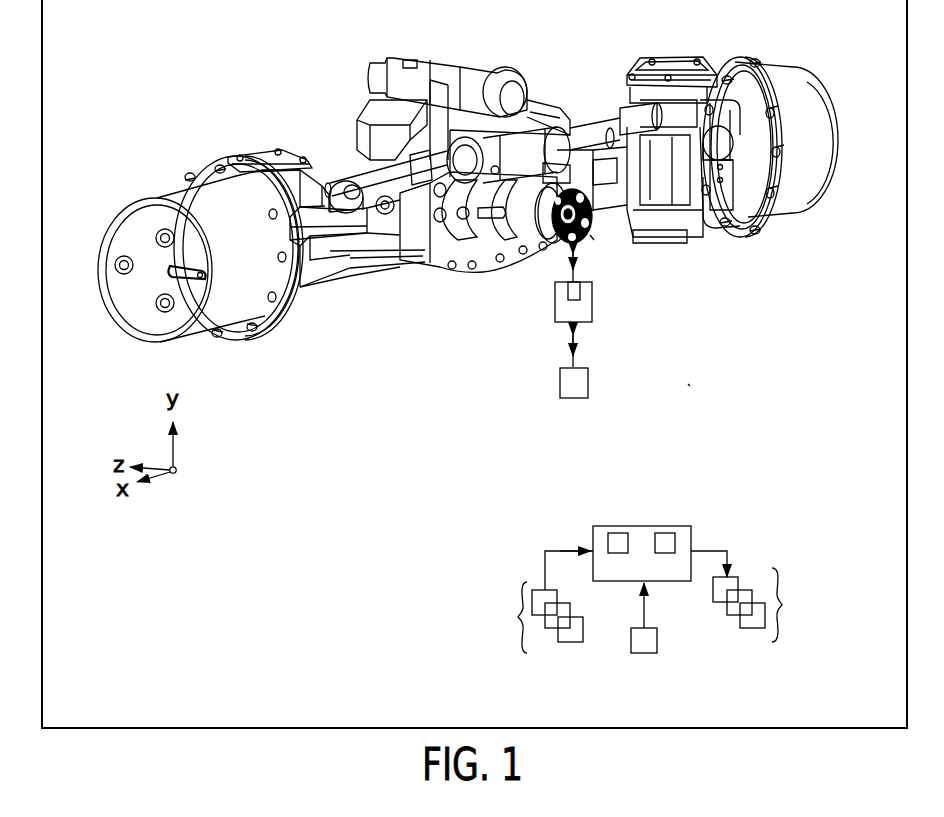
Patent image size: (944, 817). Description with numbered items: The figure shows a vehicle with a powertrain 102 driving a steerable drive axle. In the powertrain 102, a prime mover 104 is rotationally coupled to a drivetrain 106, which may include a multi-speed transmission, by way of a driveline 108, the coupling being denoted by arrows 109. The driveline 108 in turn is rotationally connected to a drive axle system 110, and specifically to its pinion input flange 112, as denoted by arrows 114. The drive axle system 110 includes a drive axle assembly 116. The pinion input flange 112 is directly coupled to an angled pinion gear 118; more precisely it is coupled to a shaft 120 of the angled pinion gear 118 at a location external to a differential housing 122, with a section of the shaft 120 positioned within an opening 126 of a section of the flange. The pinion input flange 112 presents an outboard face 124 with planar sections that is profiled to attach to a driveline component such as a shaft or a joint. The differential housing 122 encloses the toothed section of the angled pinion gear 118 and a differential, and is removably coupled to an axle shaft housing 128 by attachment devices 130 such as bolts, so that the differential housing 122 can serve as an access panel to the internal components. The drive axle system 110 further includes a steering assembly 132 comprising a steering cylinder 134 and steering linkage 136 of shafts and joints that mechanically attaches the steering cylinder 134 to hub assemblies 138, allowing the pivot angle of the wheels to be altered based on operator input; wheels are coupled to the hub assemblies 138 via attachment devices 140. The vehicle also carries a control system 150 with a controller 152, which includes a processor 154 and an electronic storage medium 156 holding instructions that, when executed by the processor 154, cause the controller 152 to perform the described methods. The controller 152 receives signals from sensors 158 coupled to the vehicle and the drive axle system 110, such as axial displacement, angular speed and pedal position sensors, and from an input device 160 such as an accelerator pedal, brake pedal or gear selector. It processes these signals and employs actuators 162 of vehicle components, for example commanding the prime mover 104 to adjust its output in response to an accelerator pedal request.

The powertrain 102 is at (692, 386).
The prime mover 104 is at (590, 380).
The drivetrain 106 is at (593, 300).
The driveline 108 is at (566, 300).
The arrows 109 is at (578, 343).
The drive axle system 110 is at (118, 78).
The pinion input flange 112 is at (605, 250).
The arrows 114 is at (566, 262).
The drive axle assembly 116 is at (203, 115).
The angled pinion gear 118 is at (598, 238).
The shaft 120 is at (503, 271).
The differential housing 122 is at (437, 254).
The outboard face 124 is at (578, 172).
The opening 126 is at (587, 178).
The axle shaft housing 128 is at (353, 278).
The attachment devices 130 is at (392, 187).
The steering assembly 132 is at (557, 80).
The steering cylinder 134 is at (533, 137).
The steering linkage 136 is at (435, 143).
The hub assemblies 138 is at (153, 185).
The attachment devices 140 is at (241, 188).
The control system 150 is at (518, 540).
The controller 152 is at (641, 526).
The processor 154 is at (608, 543).
The electronic storage medium 156 is at (676, 540).
The sensors 158 is at (533, 616).
The input device 160 is at (644, 655).
The actuators 162 is at (764, 602).